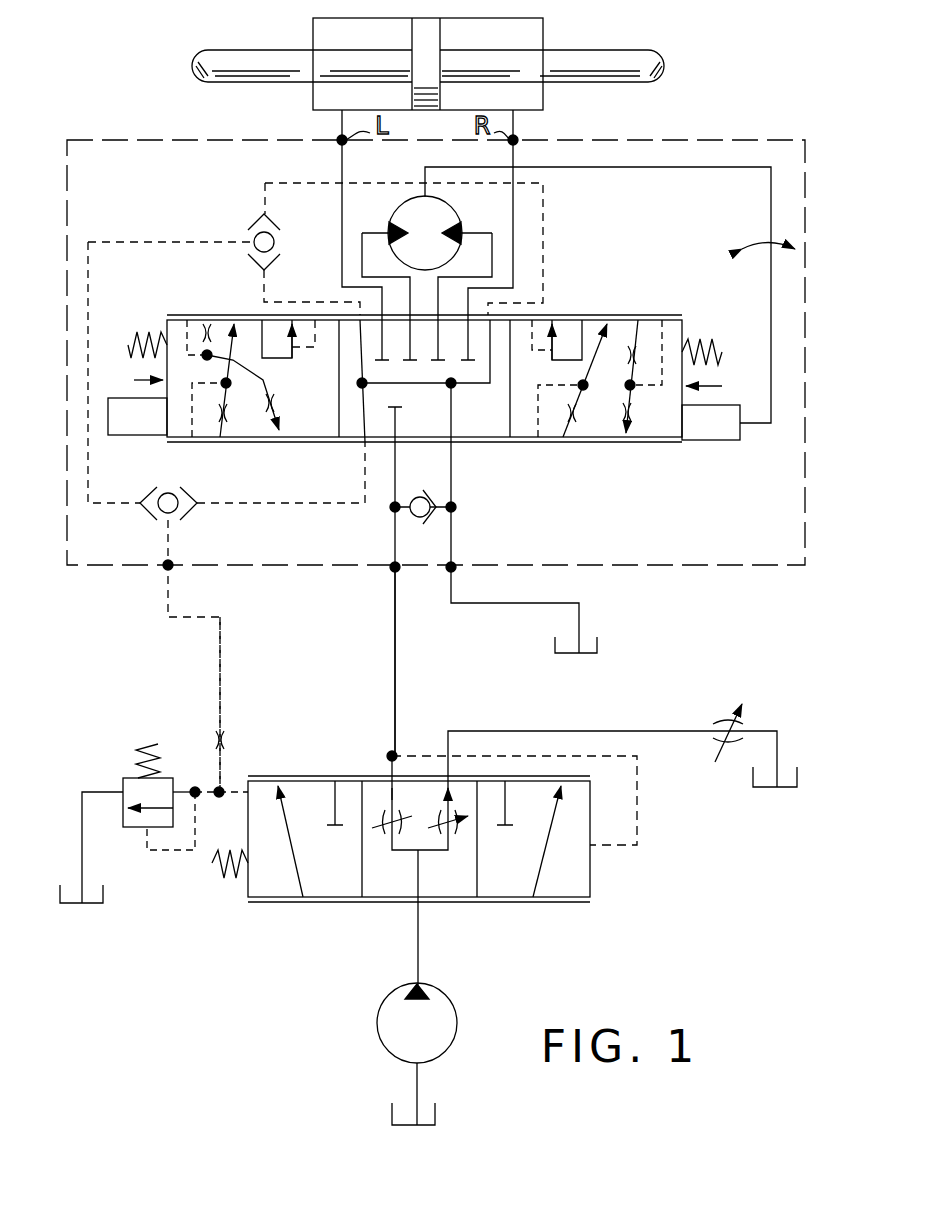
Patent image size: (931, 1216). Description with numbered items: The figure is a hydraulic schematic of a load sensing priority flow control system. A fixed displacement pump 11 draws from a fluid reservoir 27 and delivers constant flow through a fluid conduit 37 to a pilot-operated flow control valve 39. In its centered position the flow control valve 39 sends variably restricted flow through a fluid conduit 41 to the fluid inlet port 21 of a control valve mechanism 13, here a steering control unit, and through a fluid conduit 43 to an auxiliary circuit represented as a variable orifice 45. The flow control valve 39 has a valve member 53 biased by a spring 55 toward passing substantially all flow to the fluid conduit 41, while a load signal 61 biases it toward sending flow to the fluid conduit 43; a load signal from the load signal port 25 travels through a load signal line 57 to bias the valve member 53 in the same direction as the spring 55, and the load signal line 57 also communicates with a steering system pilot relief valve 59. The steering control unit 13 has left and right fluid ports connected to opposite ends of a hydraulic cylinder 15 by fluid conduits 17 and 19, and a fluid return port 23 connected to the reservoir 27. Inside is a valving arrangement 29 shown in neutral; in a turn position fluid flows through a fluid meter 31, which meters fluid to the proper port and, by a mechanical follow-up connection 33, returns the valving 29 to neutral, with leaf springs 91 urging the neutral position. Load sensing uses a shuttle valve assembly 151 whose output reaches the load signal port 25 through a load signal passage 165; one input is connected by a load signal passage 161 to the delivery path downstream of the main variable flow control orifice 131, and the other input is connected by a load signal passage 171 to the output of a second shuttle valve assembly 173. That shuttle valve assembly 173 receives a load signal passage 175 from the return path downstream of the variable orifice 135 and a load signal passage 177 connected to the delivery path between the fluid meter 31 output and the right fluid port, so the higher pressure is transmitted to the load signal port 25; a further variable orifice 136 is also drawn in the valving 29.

The fixed displacement pump 11 is at (386, 992).
The control valve mechanism 13 is at (750, 134).
The hydraulic cylinder 15 is at (560, 32).
The fluid conduit 17 is at (340, 123).
The fluid conduit 19 is at (516, 123).
The fluid inlet port 21 is at (393, 570).
The fluid return port 23 is at (453, 570).
The load signal port 25 is at (172, 567).
The fluid reservoir 27 is at (600, 650).
The valving arrangement 29 is at (637, 305).
The fluid meter 31 is at (395, 214).
The mechanical follow-up connection 33 is at (657, 168).
The fluid conduit 37 is at (420, 940).
The pilot-operated flow control valve 39 is at (310, 908).
The fluid conduit 41 is at (392, 667).
The fluid conduit 43 is at (559, 731).
The variable orifice 45 is at (720, 716).
The valve member 53 is at (592, 873).
The spring 55 is at (222, 878).
The load signal line 57 is at (220, 680).
The steering system pilot relief valve 59 is at (110, 773).
The load signal 61 is at (637, 822).
The leaf springs 91 is at (135, 332).
The main variable flow control orifice 131 is at (232, 432).
The variable orifice 135 is at (216, 328).
The variable orifice 136 is at (286, 410).
The shuttle valve assembly 151 is at (190, 518).
The load signal passage 161 is at (292, 505).
The load signal passage 165 is at (166, 540).
The load signal passage 171 is at (152, 242).
The shuttle valve assembly 173 is at (250, 224).
The load signal passage 175 is at (290, 300).
The load signal passage 177 is at (297, 183).